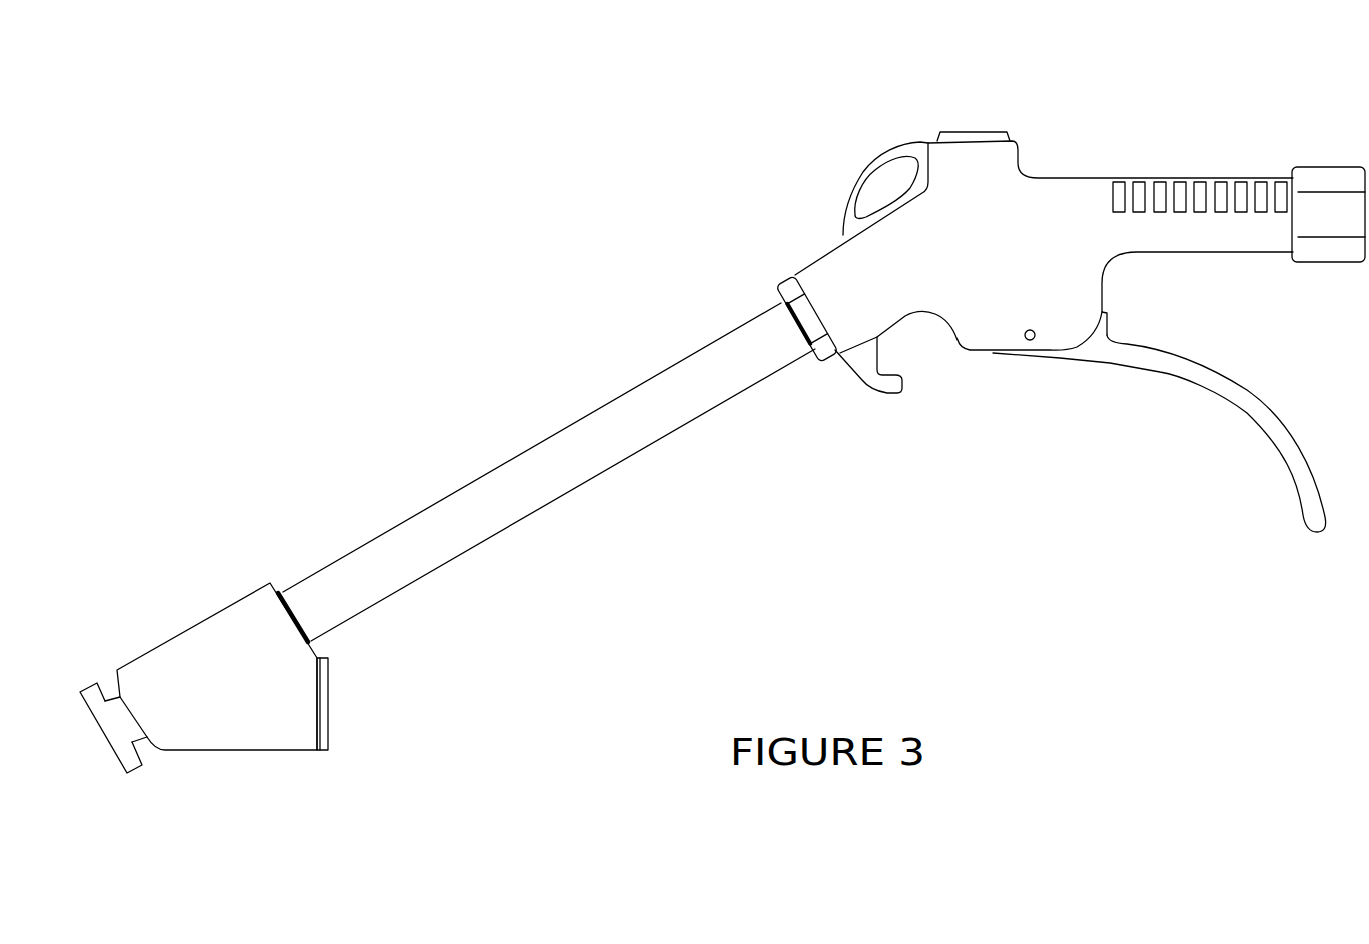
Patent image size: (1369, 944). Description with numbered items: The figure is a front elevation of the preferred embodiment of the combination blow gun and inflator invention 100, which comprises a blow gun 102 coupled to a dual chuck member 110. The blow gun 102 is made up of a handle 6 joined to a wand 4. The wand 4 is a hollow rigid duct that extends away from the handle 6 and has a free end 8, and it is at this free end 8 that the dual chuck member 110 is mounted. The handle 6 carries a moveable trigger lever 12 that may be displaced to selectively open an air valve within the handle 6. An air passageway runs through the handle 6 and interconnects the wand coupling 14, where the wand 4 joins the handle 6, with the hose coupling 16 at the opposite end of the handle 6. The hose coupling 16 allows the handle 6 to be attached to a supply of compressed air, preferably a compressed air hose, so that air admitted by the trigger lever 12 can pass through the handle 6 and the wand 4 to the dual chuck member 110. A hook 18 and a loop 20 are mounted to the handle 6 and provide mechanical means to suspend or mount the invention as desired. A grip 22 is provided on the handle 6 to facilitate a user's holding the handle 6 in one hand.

The wand 4 is at (548, 453).
The handle 6 is at (1030, 162).
The free end 8 is at (307, 607).
The trigger lever 12 is at (1302, 488).
The wand coupling 14 is at (787, 287).
The hose coupling 16 is at (1340, 177).
The hook 18 is at (893, 387).
The loop 20 is at (870, 163).
The grip 22 is at (1190, 177).
The combination blow gun and inflator invention 100 is at (447, 557).
The blow gun 102 is at (1020, 357).
The dual chuck member 110 is at (247, 718).